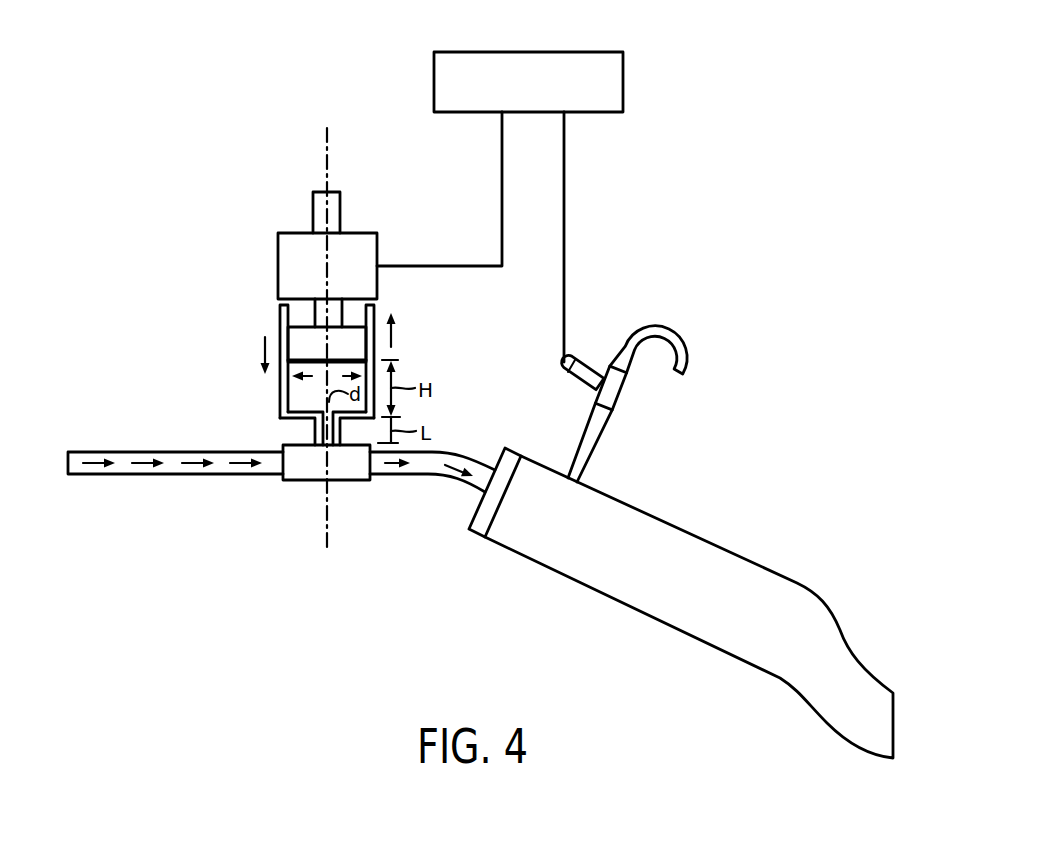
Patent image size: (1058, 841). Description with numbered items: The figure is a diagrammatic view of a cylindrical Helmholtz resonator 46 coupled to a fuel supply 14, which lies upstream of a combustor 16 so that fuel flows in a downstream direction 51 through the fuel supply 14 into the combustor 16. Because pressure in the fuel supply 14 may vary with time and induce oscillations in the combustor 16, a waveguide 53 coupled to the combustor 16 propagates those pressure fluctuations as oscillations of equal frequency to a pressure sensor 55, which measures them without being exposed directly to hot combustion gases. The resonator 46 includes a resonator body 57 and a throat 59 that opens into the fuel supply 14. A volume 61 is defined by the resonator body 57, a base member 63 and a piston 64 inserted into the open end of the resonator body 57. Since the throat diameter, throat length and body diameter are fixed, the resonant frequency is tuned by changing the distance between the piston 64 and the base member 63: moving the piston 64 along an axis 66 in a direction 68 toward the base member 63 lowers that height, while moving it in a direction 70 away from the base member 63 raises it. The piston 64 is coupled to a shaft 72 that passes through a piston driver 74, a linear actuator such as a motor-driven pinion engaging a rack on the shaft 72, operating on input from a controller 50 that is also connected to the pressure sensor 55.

The controller 50 is at (530, 52).
The axis 66 is at (328, 163).
The shaft 72 is at (313, 203).
The piston driver 74 is at (278, 240).
The piston 64 is at (293, 328).
The direction 68 is at (262, 343).
The volume 61 is at (300, 393).
The resonator body 57 is at (283, 404).
The base member 63 is at (293, 417).
The direction 70 is at (391, 335).
The resonator 46 is at (442, 359).
The downstream direction 51 is at (141, 452).
The throat 59 is at (316, 428).
The fuel supply 14 is at (394, 463).
The combustor 16 is at (660, 535).
The waveguide 53 is at (588, 440).
The pressure sensor 55 is at (592, 358).